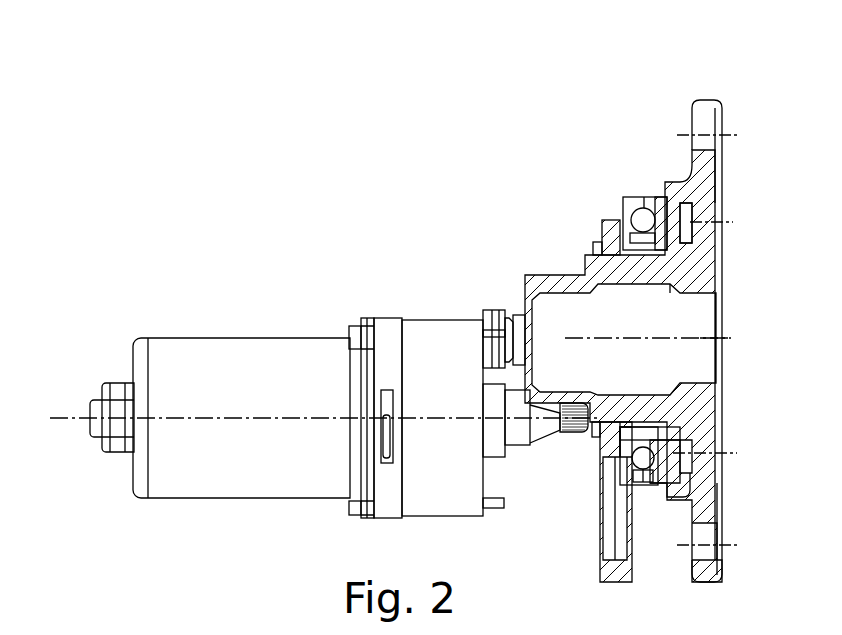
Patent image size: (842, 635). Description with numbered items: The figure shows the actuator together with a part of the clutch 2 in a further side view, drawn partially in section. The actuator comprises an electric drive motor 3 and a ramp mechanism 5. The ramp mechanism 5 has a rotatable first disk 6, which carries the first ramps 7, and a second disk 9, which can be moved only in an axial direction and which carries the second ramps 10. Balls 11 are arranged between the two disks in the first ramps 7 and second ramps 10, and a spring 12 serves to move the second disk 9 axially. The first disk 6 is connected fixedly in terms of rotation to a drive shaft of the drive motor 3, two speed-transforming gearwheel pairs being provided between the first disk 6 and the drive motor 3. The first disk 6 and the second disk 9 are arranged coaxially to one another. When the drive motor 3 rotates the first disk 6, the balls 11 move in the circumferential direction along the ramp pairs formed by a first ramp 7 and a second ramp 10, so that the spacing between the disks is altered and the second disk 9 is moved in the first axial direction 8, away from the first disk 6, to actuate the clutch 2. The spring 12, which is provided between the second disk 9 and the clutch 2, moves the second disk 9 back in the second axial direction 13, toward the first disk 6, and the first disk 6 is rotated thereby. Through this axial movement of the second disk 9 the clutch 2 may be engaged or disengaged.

The clutch 2 is at (707, 110).
The electric drive motor 3 is at (205, 360).
The ramp mechanism 5 is at (650, 203).
The first disk 6 is at (632, 462).
The first ramps 7 is at (642, 465).
The first axial direction 8 is at (732, 342).
The second disk 9 is at (660, 463).
The second ramps 10 is at (650, 447).
The balls 11 is at (638, 480).
The spring 12 is at (690, 205).
The second axial direction 13 is at (640, 327).